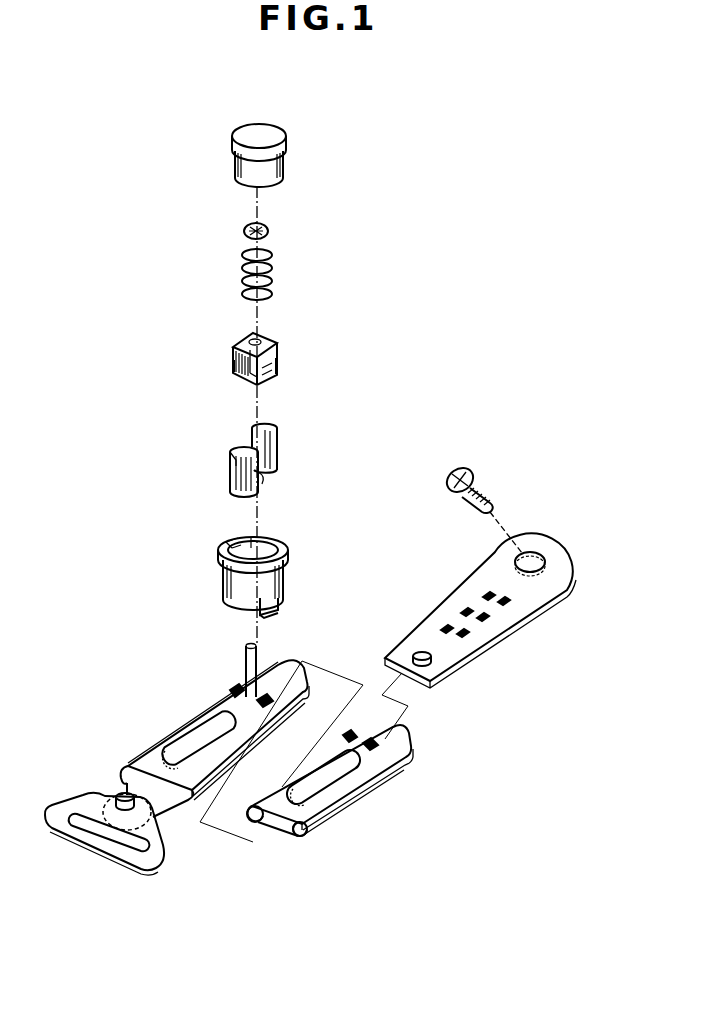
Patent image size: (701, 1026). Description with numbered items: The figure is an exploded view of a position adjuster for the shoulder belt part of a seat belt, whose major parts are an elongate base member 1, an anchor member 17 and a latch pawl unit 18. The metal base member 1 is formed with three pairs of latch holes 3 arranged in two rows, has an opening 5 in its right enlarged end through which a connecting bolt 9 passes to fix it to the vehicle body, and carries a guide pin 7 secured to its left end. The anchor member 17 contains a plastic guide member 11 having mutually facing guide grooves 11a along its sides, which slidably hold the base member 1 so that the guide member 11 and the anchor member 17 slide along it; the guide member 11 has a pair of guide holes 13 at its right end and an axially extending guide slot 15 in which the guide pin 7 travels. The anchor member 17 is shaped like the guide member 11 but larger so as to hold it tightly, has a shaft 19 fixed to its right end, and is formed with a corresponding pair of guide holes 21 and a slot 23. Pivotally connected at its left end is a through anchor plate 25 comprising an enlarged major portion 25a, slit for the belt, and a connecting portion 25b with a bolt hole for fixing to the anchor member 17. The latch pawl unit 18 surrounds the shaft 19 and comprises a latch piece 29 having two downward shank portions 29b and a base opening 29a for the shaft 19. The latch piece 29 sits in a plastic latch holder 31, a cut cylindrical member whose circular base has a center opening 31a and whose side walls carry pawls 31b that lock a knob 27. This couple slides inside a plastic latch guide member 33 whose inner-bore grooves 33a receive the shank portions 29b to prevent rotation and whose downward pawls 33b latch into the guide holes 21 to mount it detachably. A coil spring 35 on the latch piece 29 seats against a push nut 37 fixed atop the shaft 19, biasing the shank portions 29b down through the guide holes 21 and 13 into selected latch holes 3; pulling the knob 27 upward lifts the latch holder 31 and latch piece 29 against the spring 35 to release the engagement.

The base member 1 is at (567, 541).
The latch holes 3 is at (505, 601).
The opening 5 is at (545, 558).
The guide pin 7 is at (428, 658).
The connecting bolt 9 is at (480, 483).
The guide member 11 is at (345, 805).
The guide grooves 11a is at (294, 836).
The guide holes 13 is at (370, 740).
The guide slot 15 is at (330, 775).
The anchor member 17 is at (149, 742).
The latch pawl unit 18 is at (334, 433).
The shaft 19 is at (257, 655).
The guide holes 21 is at (264, 698).
The slot 23 is at (196, 745).
The through anchor plate 25 is at (153, 862).
The enlarged major portion 25a is at (138, 857).
The connecting portion 25b is at (110, 806).
The knob 27 is at (287, 133).
The latch piece 29 is at (279, 346).
The opening 29a is at (258, 341).
The shank portions 29b is at (232, 368).
The latch holder 31 is at (277, 442).
The center opening 31a is at (262, 478).
The pawl 31b is at (250, 465).
The latch guide member 33 is at (288, 547).
The grooves 33a is at (240, 540).
The pawls 33b is at (278, 607).
The coil spring 35 is at (272, 262).
The push nut 37 is at (268, 229).